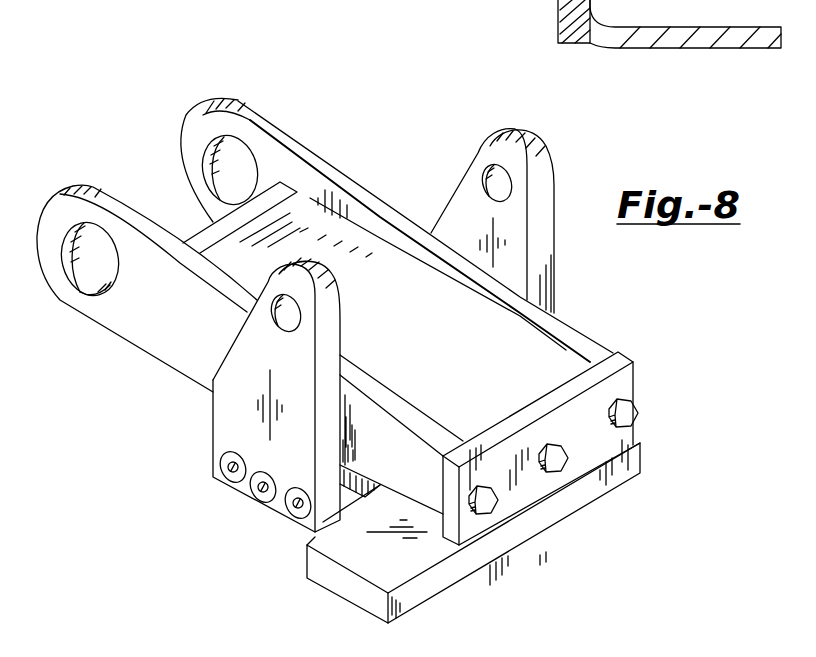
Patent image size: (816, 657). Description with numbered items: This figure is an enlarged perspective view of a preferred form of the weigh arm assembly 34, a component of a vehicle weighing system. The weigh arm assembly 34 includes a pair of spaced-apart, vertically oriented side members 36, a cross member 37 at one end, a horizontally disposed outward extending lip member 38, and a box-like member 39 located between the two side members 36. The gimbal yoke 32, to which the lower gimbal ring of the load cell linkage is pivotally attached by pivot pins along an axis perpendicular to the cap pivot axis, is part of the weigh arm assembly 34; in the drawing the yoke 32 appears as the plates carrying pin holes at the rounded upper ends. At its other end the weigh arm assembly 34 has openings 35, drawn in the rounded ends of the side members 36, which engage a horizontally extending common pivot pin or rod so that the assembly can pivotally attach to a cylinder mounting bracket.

The gimbal yoke 32 is at (340, 337).
The weigh arm assembly 34 is at (300, 130).
The openings 35 is at (104, 270).
The side members 36 is at (86, 186).
The cross member 37 is at (603, 358).
The lip member 38 is at (453, 575).
The box-like member 39 is at (357, 237).